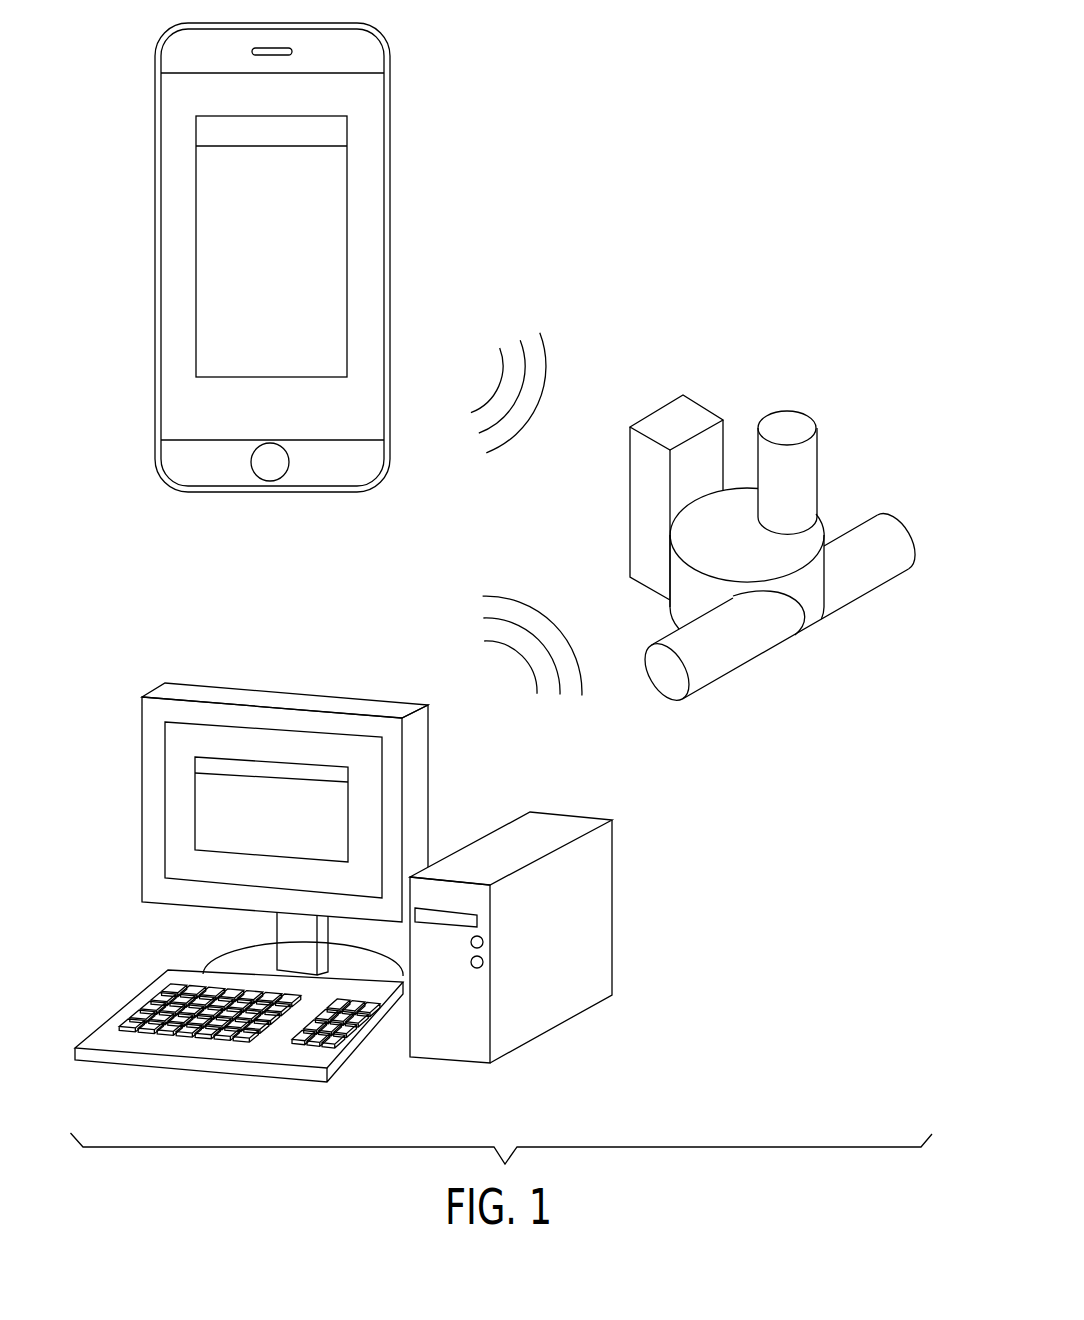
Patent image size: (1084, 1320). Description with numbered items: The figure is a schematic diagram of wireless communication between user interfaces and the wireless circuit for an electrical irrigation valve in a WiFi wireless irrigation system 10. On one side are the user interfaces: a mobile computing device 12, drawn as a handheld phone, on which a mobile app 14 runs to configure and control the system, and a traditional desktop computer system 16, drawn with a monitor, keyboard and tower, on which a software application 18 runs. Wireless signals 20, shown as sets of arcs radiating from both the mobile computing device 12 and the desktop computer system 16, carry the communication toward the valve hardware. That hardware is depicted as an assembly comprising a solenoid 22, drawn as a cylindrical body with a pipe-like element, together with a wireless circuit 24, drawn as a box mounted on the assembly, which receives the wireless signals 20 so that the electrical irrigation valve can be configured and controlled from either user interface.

The wireless circuit for electrical irrigation valve and WiFi wireless irrigation sy 10 is at (796, 112).
The mobile computing device 12 is at (316, 257).
The mobile app 14 is at (347, 197).
The traditional desktop computer system 16 is at (343, 824).
The software application 18 is at (195, 807).
The wireless signals 20 is at (547, 358).
The solenoid 22 is at (770, 632).
The wireless circuit 24 is at (707, 407).